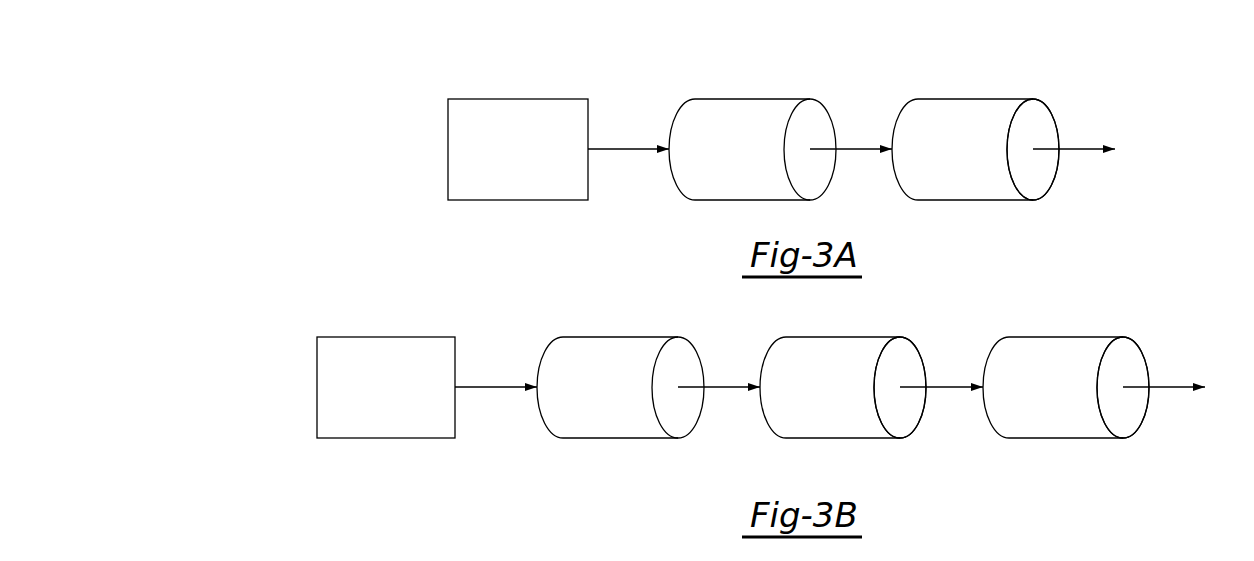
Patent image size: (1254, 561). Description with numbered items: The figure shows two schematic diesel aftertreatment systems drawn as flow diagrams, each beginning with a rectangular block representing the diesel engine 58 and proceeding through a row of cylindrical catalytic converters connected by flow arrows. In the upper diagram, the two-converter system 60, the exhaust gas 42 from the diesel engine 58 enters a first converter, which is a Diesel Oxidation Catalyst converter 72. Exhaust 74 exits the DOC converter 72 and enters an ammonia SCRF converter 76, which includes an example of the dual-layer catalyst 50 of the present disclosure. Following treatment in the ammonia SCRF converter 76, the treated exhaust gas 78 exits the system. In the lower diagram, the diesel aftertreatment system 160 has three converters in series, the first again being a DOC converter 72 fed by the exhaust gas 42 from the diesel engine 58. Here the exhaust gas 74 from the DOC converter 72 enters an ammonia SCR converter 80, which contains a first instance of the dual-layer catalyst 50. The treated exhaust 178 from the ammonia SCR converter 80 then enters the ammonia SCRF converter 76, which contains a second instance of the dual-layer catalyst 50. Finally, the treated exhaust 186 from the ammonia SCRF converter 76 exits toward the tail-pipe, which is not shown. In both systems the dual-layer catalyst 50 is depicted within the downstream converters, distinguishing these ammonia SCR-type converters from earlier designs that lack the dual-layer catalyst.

In FIG. 3A, the two-converter system 60 is at (702, 42).
In FIG. 3B, the diesel aftertreatment system 160 is at (571, 284).
In FIG. 3A, the diesel engine 58 is at (518, 98).
In FIG. 3B, the diesel engine 58 is at (386, 336).
In FIG. 3A, the exhaust gas 42 is at (630, 147).
In FIG. 3B, the exhaust gas 42 is at (498, 385).
In FIG. 3A, the Diesel Oxidation Catalyst (DOC) converter 72 is at (748, 184).
In FIG. 3B, the Diesel Oxidation Catalyst (DOC) converter 72 is at (616, 423).
In FIG. 3A, the exhaust 74 is at (853, 147).
In FIG. 3B, the exhaust 74 is at (721, 385).
In FIG. 3A, the ammonia SCRF converter 76 is at (971, 185).
In FIG. 3B, the ammonia SCRF converter 76 is at (1062, 423).
In FIG. 3A, the treated exhaust gas 78 is at (1076, 147).
In FIG. 3A, the dual-layer catalyst 50 is at (1042, 167).
In FIG. 3B, the dual-layer catalyst 50 is at (909, 405).
In FIG. 3B, the ammonia SCR converter 80 is at (838, 423).
In FIG. 3B, the treated exhaust 178 is at (944, 385).
In FIG. 3B, the treated exhaust 186 is at (1166, 385).